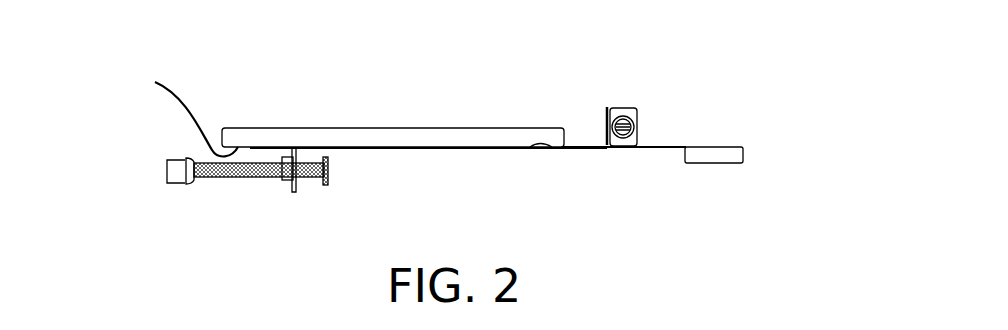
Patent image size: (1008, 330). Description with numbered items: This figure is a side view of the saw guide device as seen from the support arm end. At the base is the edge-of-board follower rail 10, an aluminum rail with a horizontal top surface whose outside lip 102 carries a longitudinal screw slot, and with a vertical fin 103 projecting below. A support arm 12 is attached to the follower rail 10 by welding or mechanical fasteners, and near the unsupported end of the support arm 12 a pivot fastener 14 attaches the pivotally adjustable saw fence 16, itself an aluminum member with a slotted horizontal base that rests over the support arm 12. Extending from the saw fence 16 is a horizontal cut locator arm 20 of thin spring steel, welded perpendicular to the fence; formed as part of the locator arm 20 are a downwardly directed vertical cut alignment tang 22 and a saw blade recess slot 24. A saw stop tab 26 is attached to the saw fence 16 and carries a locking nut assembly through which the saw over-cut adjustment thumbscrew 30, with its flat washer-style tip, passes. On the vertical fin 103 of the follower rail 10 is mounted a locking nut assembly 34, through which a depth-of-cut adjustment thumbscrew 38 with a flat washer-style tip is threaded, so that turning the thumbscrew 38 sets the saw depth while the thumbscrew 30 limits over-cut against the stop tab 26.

The edge-of-board follower rail 10 is at (366, 150).
The support arm 12 is at (338, 137).
The pivot fastener 14 is at (542, 145).
The pivotally adjustable saw fence 16 is at (578, 150).
The horizontal cut locator arm 20 is at (655, 146).
The vertical cut alignment tang 22 is at (725, 157).
The saw blade recess slot 24 is at (673, 145).
The saw stop tab 26 is at (612, 108).
The saw over-cut adjustment thumbscrew 30 is at (617, 143).
The locking nut assembly 34 is at (285, 180).
The depth-of-cut adjustment thumbscrew 38 is at (177, 158).
The outside lip 102 is at (175, 108).
The vertical fin 103 is at (297, 193).